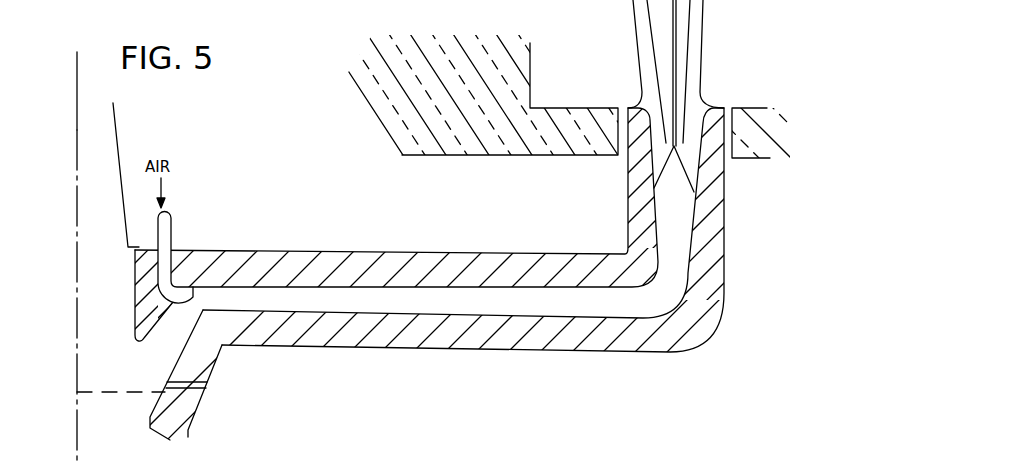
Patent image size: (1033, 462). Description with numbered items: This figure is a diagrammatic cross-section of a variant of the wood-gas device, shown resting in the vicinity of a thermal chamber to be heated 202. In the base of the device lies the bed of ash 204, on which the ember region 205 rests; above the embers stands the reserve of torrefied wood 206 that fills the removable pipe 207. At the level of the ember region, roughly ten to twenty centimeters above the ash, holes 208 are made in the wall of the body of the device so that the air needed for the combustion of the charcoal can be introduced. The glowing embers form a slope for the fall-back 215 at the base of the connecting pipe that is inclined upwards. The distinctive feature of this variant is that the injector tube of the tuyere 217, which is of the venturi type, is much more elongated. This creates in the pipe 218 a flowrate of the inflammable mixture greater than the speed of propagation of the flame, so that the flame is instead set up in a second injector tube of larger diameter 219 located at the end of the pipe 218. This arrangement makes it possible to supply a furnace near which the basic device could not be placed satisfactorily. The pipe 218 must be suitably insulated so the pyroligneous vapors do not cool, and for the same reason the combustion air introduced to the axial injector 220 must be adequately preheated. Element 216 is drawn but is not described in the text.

The thermal chamber to be heated 202 is at (597, 87).
The bed of ash 204 is at (94, 387).
The ember region 205 is at (125, 366).
The reserve of torrefied wood 206 is at (98, 131).
The removable pipe 207 is at (120, 172).
The holes 208 is at (205, 384).
The slope for the fall-back 215 is at (160, 338).
The upper wall 216 is at (633, 204).
The injector tube of the tuyere 217 is at (319, 288).
The pipe 218 is at (440, 306).
The second injector tube of larger diameter 219 is at (633, 168).
The axial injector 220 is at (200, 311).